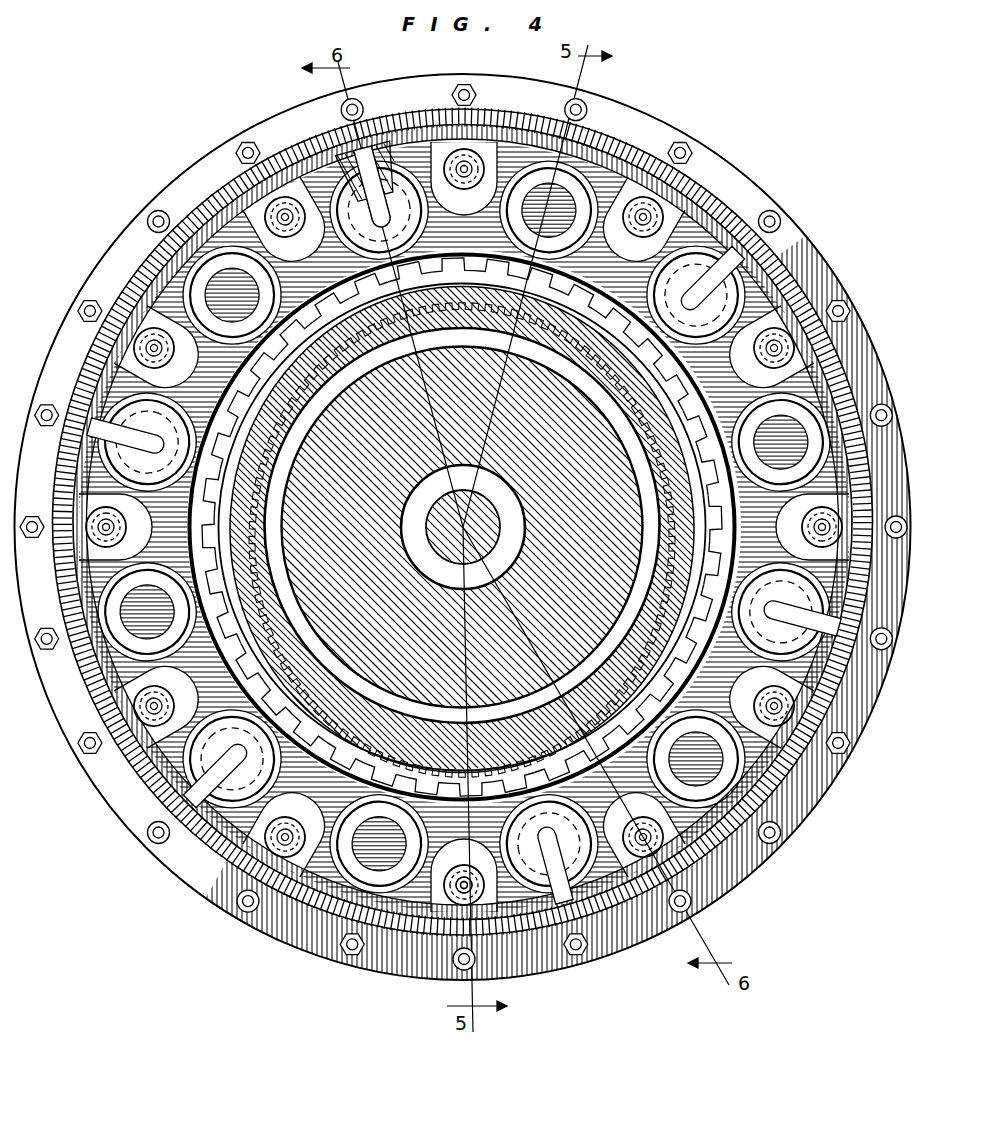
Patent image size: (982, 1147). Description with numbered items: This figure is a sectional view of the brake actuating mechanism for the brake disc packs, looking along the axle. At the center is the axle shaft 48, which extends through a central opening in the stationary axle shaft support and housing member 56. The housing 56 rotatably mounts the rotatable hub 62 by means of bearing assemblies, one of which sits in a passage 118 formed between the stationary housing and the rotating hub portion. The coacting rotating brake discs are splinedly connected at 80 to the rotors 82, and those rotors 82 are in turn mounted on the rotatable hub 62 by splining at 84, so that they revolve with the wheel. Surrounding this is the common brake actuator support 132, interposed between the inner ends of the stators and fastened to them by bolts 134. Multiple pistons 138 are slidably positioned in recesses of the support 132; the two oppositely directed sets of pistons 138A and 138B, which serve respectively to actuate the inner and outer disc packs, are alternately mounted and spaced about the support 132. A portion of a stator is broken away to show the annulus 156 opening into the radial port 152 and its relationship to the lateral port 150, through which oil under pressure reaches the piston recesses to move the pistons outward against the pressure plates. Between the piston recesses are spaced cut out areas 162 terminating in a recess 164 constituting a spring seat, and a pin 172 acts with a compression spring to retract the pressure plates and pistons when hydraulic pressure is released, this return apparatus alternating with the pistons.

The axle shaft 48 is at (437, 548).
The axle shaft support and housing member 56 is at (364, 544).
The rotatable hub 62 is at (397, 340).
The splining 80 is at (716, 500).
The rotors 82 is at (728, 548).
The splining 84 is at (348, 342).
The passage 118 is at (344, 474).
The common brake actuator support 132 is at (549, 124).
The bolts 134 is at (93, 296).
The pistons 138 is at (325, 170).
The pistons 138A is at (386, 155).
The pistons 138B is at (575, 185).
The lateral port 150 is at (410, 229).
The radial port 152 is at (350, 146).
The annulus 156 is at (447, 105).
The cut out areas 162 is at (448, 892).
The spring seat recess 164 is at (640, 258).
The pin 172 is at (473, 897).